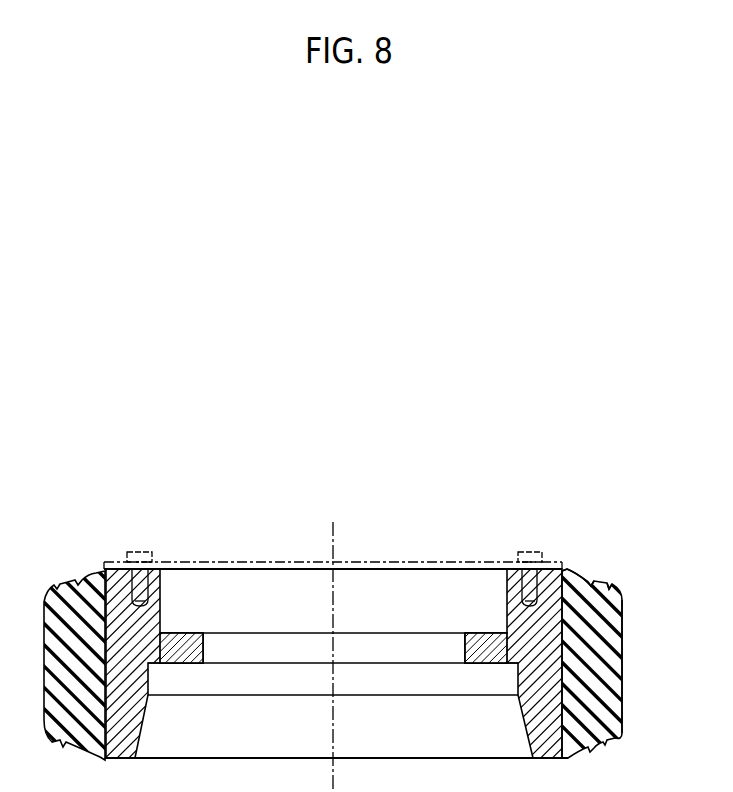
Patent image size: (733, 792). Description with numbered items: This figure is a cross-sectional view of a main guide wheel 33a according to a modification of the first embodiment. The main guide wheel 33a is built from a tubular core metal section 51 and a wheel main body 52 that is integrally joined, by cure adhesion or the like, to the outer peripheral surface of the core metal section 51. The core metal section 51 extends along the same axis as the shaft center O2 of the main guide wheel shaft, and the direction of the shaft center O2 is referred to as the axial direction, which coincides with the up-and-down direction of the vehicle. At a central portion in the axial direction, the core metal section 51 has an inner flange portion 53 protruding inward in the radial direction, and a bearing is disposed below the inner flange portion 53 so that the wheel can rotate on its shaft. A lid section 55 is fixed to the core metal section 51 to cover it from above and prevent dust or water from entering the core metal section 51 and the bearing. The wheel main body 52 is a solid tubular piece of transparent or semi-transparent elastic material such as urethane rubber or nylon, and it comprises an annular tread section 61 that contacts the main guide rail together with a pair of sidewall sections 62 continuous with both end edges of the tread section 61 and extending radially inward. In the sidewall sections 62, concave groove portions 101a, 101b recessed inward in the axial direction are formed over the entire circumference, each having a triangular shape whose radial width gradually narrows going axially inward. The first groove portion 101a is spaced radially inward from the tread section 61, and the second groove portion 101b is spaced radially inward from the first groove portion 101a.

The shaft center O2 is at (336, 534).
The core metal section 51 is at (548, 724).
The wheel main body 52 is at (623, 632).
The inner flange portion 53 is at (480, 648).
The lid section 55 is at (430, 562).
The tread section 61 is at (625, 605).
The sidewall section 62 is at (571, 574).
The first groove portion 101a is at (612, 575).
The second groove portion 101b is at (592, 580).
The main guide wheel 33a is at (543, 489).